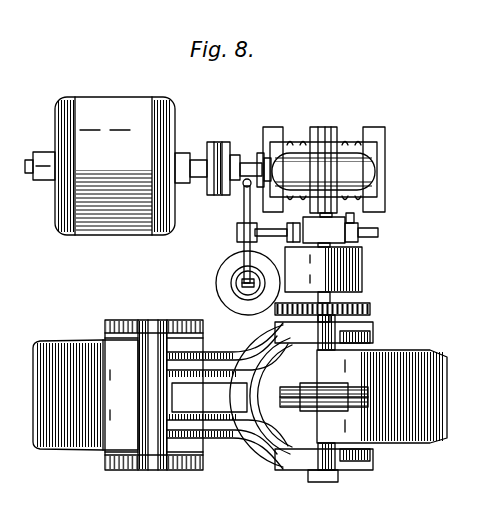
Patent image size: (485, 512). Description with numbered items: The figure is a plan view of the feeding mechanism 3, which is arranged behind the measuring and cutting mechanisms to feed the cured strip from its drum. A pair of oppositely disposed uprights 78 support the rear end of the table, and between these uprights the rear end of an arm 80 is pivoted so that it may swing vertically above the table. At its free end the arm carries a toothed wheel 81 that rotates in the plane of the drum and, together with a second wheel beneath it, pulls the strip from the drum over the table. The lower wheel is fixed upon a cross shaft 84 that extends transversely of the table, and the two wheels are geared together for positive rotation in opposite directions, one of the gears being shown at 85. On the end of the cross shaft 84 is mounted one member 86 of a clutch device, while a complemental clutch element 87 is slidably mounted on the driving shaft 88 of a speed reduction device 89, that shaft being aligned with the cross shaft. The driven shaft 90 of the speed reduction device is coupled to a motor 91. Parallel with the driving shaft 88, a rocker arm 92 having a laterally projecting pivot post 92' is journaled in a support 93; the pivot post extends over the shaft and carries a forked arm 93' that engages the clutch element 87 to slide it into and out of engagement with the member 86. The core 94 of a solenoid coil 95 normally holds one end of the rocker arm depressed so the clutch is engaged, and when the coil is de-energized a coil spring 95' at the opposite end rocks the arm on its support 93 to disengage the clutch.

The feeding mechanism 3 is at (128, 278).
The uprights 78 is at (116, 322).
The arm 80 is at (229, 396).
The toothed wheel 81 is at (323, 388).
The cross shaft 84 is at (350, 322).
The gear 85 is at (372, 307).
The clutch member 86 is at (365, 272).
The clutch element 87 is at (340, 226).
The driving shaft 88 is at (335, 212).
The speed reduction device 89 is at (300, 152).
The driven shaft 90 is at (245, 158).
The motor 91 is at (116, 166).
The rocker arm 92 is at (211, 234).
The pivot post 92' is at (241, 225).
The support 93 is at (214, 238).
The forked arm 93' is at (395, 227).
The core 94 is at (240, 283).
The solenoid coil 95 is at (226, 283).
The coil spring 95' is at (241, 186).